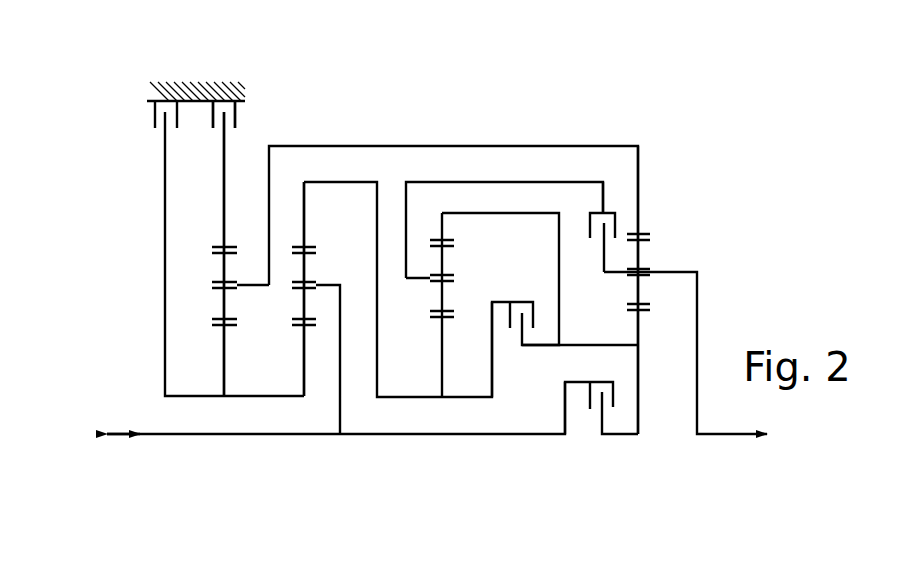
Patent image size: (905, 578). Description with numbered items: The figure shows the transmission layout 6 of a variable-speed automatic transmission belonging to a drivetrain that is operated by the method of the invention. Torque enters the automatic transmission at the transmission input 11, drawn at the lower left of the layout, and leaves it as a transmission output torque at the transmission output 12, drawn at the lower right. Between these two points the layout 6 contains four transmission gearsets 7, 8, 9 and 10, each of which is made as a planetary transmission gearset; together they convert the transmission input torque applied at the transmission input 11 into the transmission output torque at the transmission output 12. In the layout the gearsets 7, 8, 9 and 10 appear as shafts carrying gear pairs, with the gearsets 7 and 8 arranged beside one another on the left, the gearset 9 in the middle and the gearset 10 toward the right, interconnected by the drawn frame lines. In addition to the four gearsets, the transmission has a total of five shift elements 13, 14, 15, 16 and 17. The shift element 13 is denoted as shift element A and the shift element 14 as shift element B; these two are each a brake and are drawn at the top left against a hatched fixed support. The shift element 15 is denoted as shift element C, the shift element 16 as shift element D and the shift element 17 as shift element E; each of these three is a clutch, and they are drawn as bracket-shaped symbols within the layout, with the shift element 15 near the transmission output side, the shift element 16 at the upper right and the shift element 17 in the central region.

The transmission layout 6 is at (137, 305).
The transmission gearset 7 is at (233, 227).
The transmission gearset 8 is at (320, 229).
The transmission gearset 9 is at (428, 323).
The transmission gearset 10 is at (653, 221).
The transmission input 11 is at (183, 436).
The transmission output 12 is at (727, 437).
The shift element A 13 is at (134, 93).
The shift element B 14 is at (258, 93).
The shift element C 15 is at (590, 419).
The shift element D 16 is at (616, 186).
The shift element E 17 is at (512, 289).